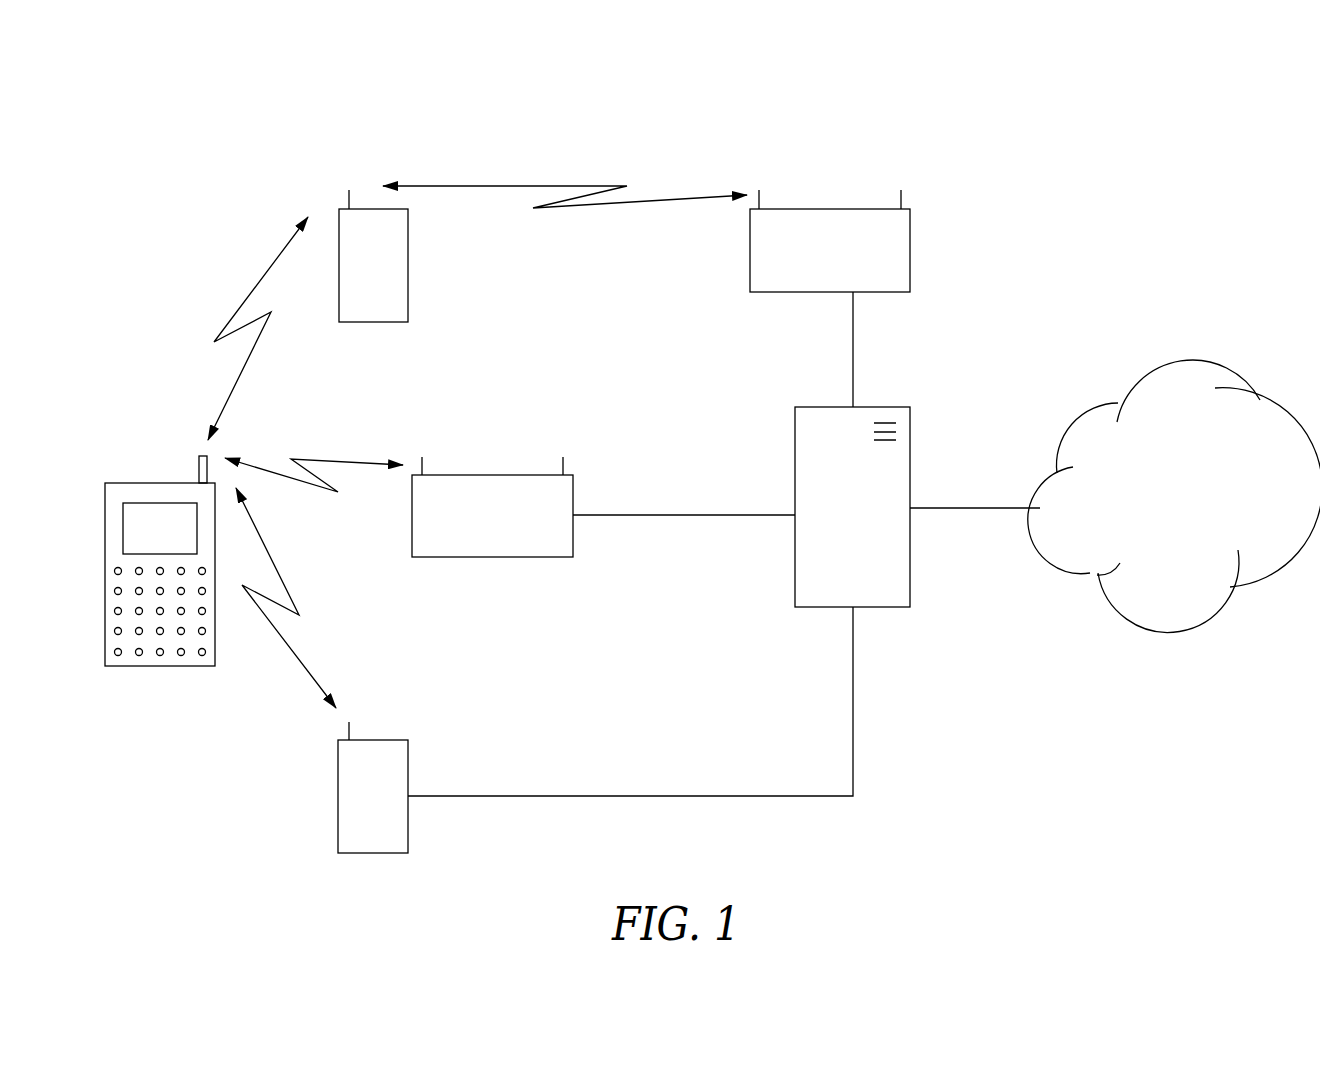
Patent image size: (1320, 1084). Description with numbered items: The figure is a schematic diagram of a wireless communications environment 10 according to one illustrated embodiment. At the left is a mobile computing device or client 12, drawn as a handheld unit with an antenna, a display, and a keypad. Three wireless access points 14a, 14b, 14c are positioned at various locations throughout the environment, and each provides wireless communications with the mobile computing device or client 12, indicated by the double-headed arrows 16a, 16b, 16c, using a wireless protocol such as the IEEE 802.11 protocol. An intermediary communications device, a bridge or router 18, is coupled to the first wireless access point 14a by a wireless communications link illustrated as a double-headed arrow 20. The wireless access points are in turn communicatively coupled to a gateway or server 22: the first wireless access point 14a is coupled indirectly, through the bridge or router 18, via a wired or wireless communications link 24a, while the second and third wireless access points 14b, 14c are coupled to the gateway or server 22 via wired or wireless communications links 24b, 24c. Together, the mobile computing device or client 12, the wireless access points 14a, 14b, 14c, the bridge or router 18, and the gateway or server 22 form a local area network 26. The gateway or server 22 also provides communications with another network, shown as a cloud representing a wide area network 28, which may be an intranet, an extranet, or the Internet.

The wireless communications environment 10 is at (1147, 142).
The mobile computing device or client 12 is at (160, 666).
The wireless access point 14a is at (408, 258).
The wireless access point 14b is at (495, 475).
The wireless access point 14c is at (374, 740).
The wireless communications (double-headed arrow) 16a is at (258, 278).
The wireless communications (double-headed arrow) 16b is at (348, 459).
The wireless communications (double-headed arrow) 16c is at (302, 660).
The bridge or router 18 is at (830, 209).
The wireless communications link 20 is at (505, 186).
The gateway or server 22 is at (897, 407).
The wired or wireless communications link 24a is at (853, 321).
The wired or wireless communications link 24b is at (692, 513).
The wired or wireless communications link 24c is at (692, 795).
The local area network (LAN) 26 is at (878, 847).
The wide area network (WAN) 28 is at (1182, 347).